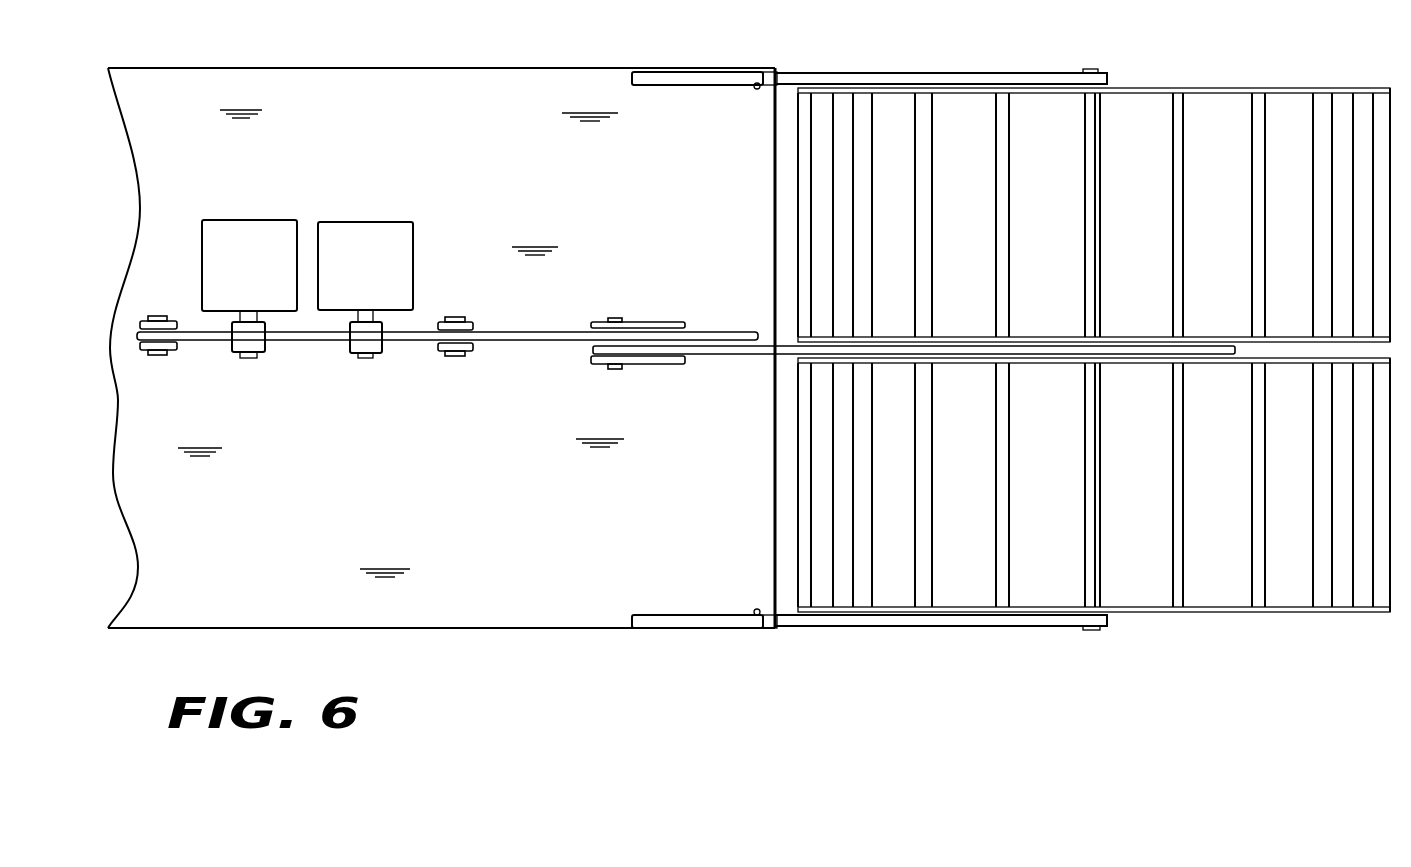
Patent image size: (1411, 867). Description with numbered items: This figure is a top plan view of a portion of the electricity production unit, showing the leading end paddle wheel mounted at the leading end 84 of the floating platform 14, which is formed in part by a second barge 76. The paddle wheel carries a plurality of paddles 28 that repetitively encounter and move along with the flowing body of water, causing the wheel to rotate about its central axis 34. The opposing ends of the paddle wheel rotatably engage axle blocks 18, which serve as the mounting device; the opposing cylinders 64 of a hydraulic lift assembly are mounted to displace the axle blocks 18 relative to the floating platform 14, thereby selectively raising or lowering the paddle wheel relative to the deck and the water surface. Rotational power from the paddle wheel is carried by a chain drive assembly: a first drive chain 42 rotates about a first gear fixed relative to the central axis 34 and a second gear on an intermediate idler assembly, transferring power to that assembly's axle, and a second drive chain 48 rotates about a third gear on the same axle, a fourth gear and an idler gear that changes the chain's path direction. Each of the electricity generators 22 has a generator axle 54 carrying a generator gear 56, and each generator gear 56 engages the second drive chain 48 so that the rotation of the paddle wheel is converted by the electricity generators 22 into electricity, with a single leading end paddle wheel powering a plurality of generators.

The floating platform 14 is at (407, 628).
The second barge 76 is at (523, 628).
The opposing cylinders 64 is at (757, 88).
The leading end 84 is at (777, 578).
The paddles 28 is at (1173, 590).
The axle blocks 18 is at (1108, 78).
The central axis 34 is at (1090, 69).
The second drive chain 48 is at (537, 341).
The first drive chain 42 is at (745, 355).
The generator gear 56 is at (238, 343).
The electricity generators 22 is at (255, 220).
The generator axle 54 is at (253, 359).